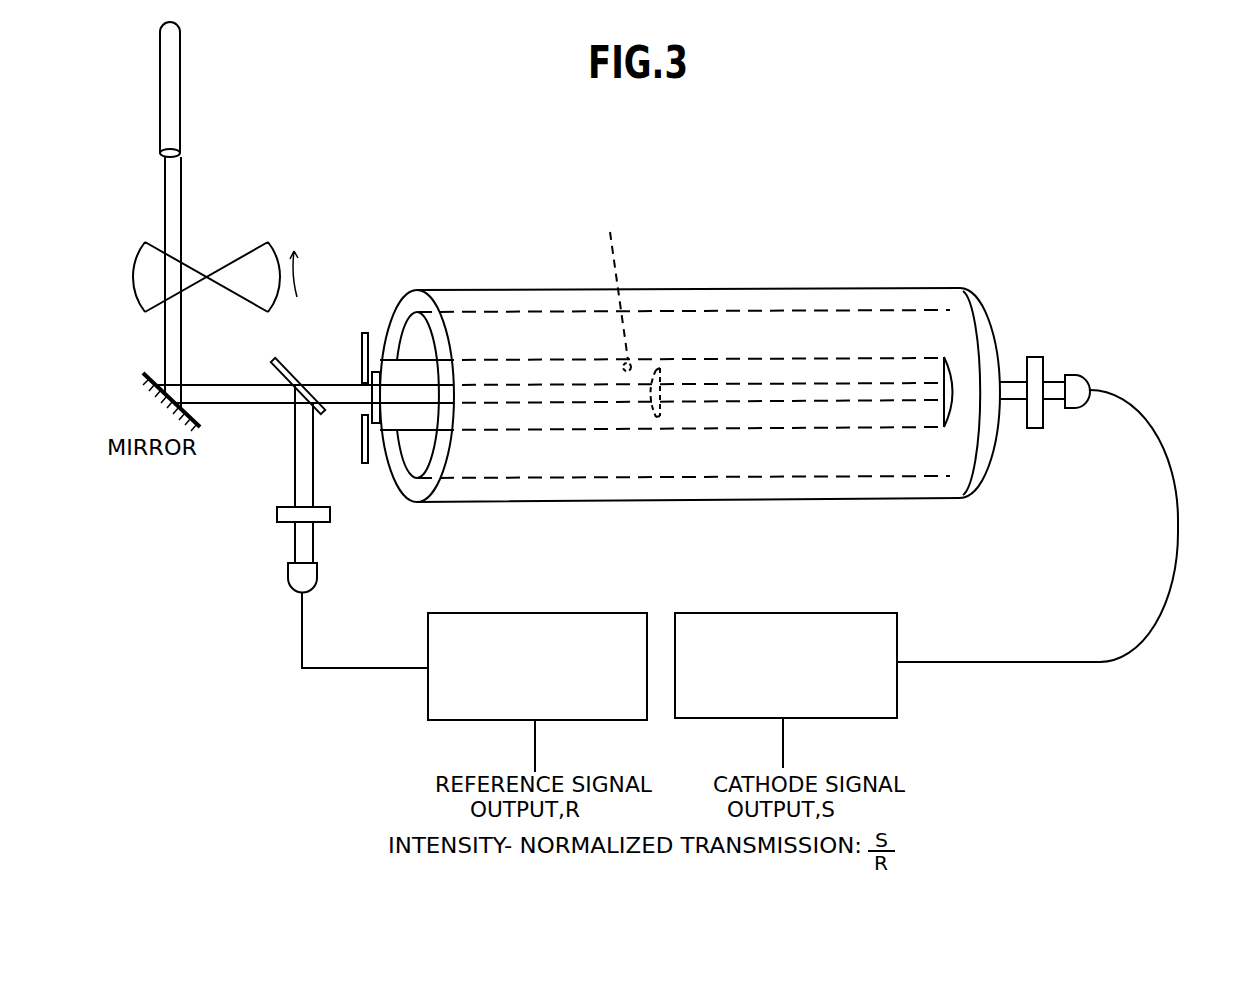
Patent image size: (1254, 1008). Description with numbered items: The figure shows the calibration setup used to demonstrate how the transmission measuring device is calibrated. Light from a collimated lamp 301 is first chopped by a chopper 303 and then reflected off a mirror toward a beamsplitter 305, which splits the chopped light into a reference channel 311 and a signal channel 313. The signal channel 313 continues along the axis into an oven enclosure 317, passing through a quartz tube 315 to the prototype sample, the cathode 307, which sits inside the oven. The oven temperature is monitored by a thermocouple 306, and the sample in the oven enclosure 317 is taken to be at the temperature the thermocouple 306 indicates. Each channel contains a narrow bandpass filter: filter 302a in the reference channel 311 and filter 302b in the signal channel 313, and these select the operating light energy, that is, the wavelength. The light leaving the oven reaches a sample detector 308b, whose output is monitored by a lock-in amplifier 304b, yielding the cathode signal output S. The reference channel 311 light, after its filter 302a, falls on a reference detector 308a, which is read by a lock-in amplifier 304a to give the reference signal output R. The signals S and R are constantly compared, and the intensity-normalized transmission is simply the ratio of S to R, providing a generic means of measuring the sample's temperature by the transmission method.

The lamp 301 is at (181, 95).
The chopper 303 is at (256, 247).
The beamsplitter 305 is at (283, 357).
The signal channel 313 is at (328, 384).
The reference channel 311 is at (293, 466).
The filter 302a is at (328, 513).
The reference detector 308a is at (289, 576).
The oven enclosure 317 is at (732, 288).
The quartz tube 315 is at (735, 358).
The thermocouple 306 is at (610, 280).
The prototype sample 307 is at (660, 418).
The filter 302b is at (1035, 357).
The sample detector 308b is at (1073, 375).
The lock-in amplifier 304a is at (553, 688).
The lock-in amplifier 304b is at (817, 688).